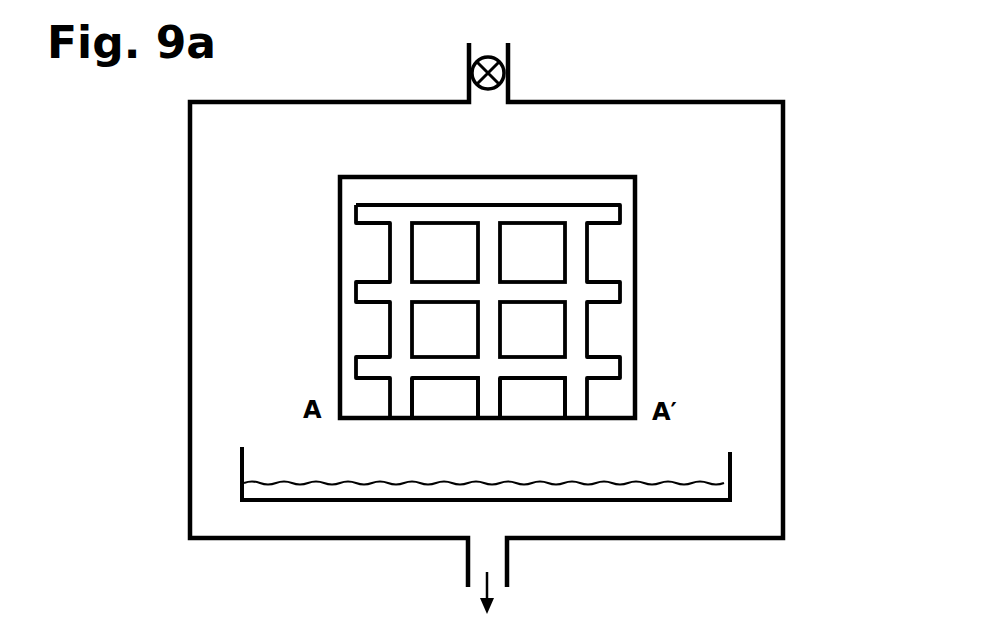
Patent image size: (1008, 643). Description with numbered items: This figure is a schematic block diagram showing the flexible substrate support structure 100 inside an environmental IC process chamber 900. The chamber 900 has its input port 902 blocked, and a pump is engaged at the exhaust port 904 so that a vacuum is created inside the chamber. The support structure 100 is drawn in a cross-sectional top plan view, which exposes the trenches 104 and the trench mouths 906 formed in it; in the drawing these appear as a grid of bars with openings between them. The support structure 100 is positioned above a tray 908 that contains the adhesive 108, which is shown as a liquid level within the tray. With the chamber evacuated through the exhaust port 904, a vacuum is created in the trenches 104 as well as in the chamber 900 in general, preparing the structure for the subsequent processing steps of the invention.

The flexible substrate support structure 100 is at (684, 172).
The trenches 104 is at (495, 393).
The adhesive 108 is at (598, 488).
The chamber 900 is at (783, 221).
The input port 902 is at (505, 75).
The exhaust port 904 is at (507, 575).
The trench mouths 906 is at (400, 421).
The tray 908 is at (733, 463).